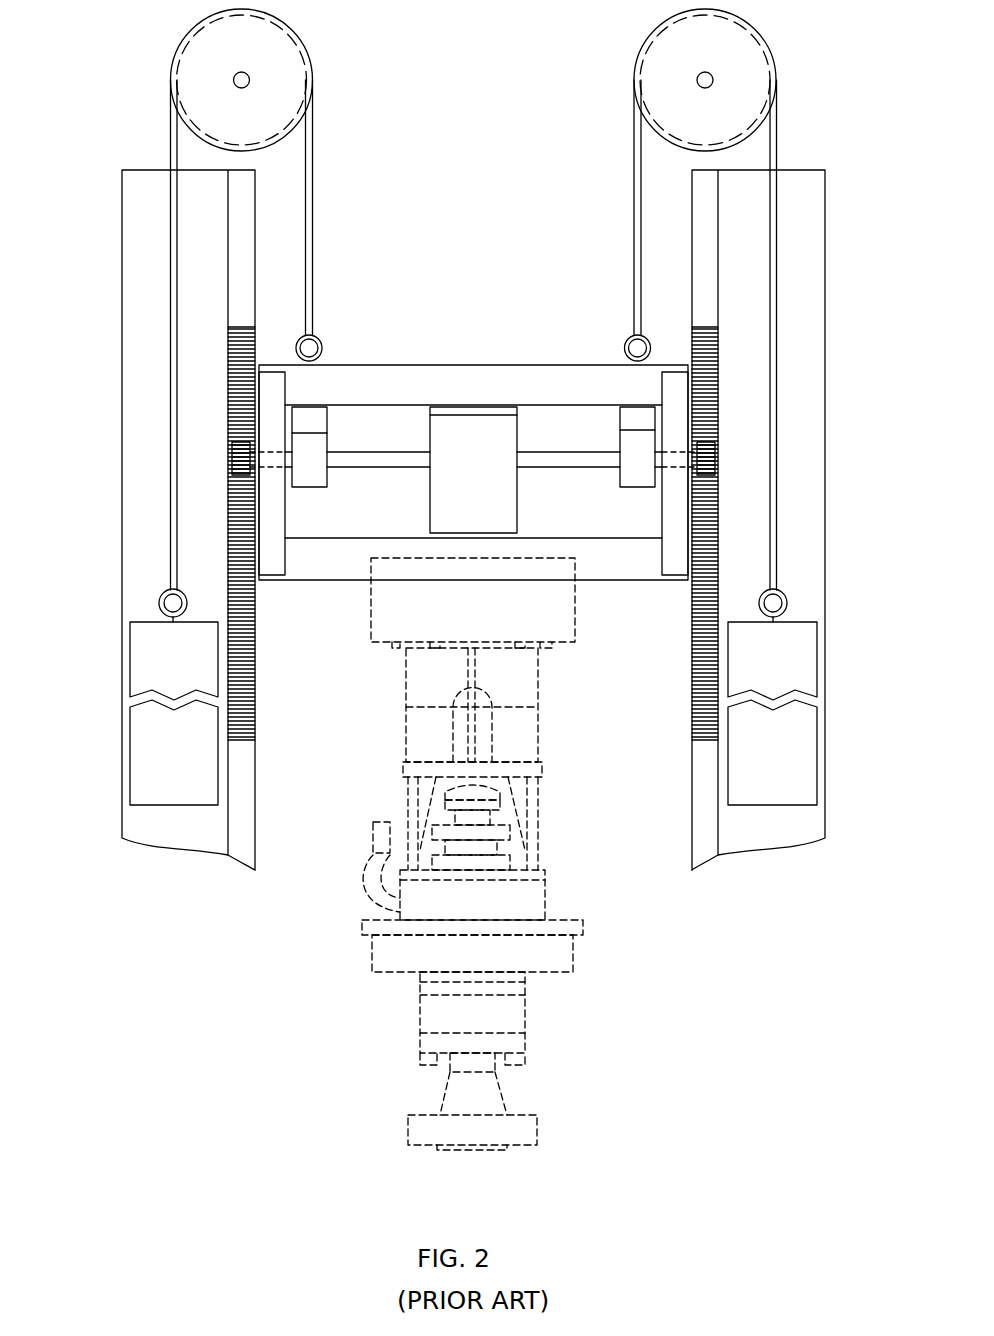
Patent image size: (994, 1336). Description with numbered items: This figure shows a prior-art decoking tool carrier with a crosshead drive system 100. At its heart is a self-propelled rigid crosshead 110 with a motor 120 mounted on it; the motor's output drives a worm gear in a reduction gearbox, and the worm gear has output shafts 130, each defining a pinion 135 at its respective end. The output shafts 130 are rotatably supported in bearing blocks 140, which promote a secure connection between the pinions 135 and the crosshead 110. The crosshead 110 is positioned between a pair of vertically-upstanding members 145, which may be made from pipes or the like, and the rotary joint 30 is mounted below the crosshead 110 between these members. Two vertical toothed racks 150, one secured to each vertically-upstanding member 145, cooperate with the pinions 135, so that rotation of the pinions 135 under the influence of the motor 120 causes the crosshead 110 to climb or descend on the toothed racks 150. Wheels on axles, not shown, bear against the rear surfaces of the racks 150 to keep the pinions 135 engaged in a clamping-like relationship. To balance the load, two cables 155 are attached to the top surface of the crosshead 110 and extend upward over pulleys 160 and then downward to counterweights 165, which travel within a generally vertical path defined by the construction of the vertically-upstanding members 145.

The crosshead drive system 100 is at (125, 106).
The crosshead 110 is at (330, 575).
The motor 120 is at (472, 440).
The output shafts 130 is at (380, 470).
The pinions 135 is at (238, 460).
The bearing blocks 140 is at (327, 420).
The vertically-upstanding members 145 is at (122, 240).
The toothed racks 150 is at (692, 658).
The cables 155 is at (313, 240).
The pulleys 160 is at (290, 60).
The counterweights 165 is at (145, 757).
The rotary joint 30 is at (540, 893).